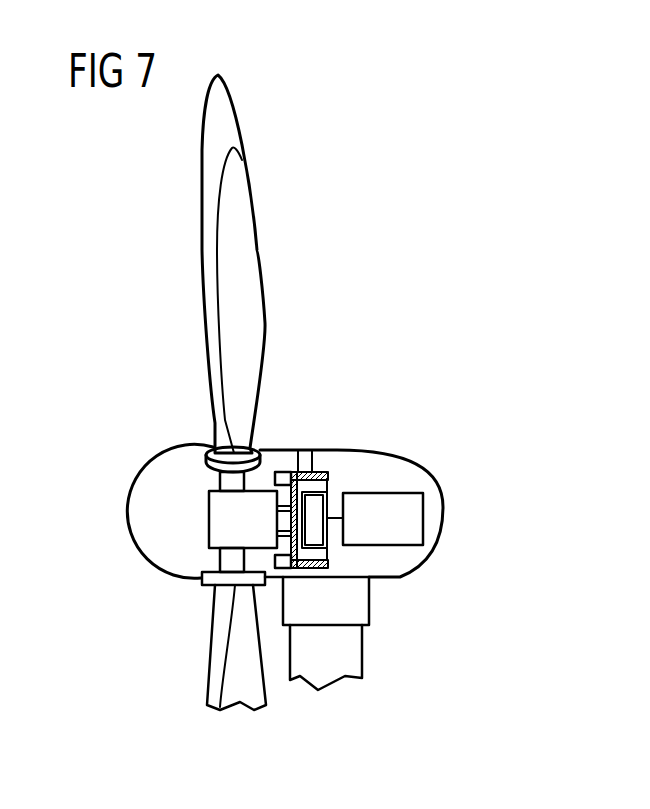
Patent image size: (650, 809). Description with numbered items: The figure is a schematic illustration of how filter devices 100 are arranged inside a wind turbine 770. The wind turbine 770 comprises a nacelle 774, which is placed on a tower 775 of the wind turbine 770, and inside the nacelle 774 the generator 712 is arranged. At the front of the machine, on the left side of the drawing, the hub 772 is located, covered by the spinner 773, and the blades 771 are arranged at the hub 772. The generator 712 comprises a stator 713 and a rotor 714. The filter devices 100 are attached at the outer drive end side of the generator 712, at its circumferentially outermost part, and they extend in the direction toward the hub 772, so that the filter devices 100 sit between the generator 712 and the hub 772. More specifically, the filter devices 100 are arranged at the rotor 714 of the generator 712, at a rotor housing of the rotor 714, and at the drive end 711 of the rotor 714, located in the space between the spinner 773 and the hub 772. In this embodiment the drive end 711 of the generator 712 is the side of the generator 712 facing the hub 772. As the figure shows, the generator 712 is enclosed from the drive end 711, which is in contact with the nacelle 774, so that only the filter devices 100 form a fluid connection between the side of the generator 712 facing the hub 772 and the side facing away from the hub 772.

The wind turbine 770 is at (288, 417).
The blades 771 is at (202, 176).
The hub 772 is at (220, 517).
The spinner 773 is at (158, 483).
The nacelle 774 is at (389, 487).
The tower 775 is at (347, 657).
The drive end 711 is at (285, 458).
The generator 712 is at (335, 457).
The stator 713 is at (320, 507).
The rotor 714 is at (307, 468).
The filter device 100 is at (268, 450).